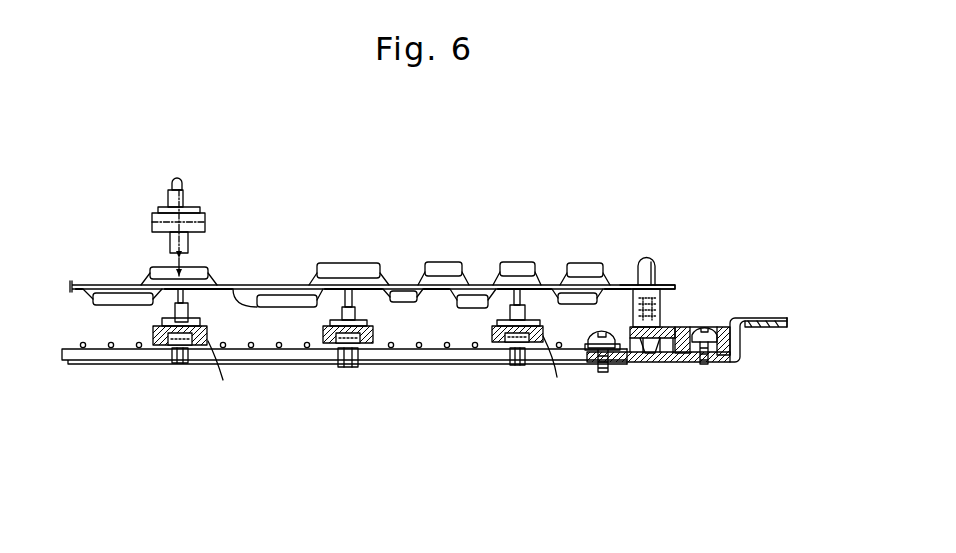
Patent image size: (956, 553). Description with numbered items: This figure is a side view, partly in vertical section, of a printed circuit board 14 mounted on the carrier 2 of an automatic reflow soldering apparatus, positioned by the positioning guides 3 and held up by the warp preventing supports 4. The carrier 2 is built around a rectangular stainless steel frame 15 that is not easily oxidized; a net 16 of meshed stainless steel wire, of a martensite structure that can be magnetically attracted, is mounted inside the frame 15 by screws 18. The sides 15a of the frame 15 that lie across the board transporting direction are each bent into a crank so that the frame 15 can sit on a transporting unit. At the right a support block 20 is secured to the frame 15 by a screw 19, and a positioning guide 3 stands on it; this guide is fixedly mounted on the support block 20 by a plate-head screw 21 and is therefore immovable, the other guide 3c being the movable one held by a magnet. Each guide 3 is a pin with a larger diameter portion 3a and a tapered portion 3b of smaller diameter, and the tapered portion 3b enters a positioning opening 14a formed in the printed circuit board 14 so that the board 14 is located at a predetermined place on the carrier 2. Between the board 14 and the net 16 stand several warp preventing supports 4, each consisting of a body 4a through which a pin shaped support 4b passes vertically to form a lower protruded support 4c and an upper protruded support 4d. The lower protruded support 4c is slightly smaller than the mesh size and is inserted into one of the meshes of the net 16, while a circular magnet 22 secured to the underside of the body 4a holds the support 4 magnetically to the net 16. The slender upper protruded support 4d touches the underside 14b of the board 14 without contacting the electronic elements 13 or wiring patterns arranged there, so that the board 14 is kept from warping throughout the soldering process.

The carrier 2 is at (673, 365).
The positioning guide 3 is at (678, 249).
The larger diameter portion 3a is at (663, 302).
The tapered portion 3b is at (657, 262).
The movable positioning guide 3c is at (638, 262).
The warp preventing support 4 is at (305, 311).
The body 4a is at (155, 333).
The pin shaped support 4b is at (176, 363).
The lower protruded support 4c is at (163, 350).
The upper protruded support 4d is at (131, 283).
The electronic element 13 is at (359, 263).
The printed circuit board 14 is at (477, 282).
The positioning opening 14a is at (632, 285).
The underside 14b is at (279, 289).
The frame 15 is at (767, 329).
The side 15a is at (788, 321).
The net 16 is at (292, 361).
The screw 18 is at (603, 374).
The screw 19 is at (705, 364).
The support block 20 is at (733, 324).
The plate-head screw 21 is at (645, 348).
The circular magnet 22 is at (223, 380).